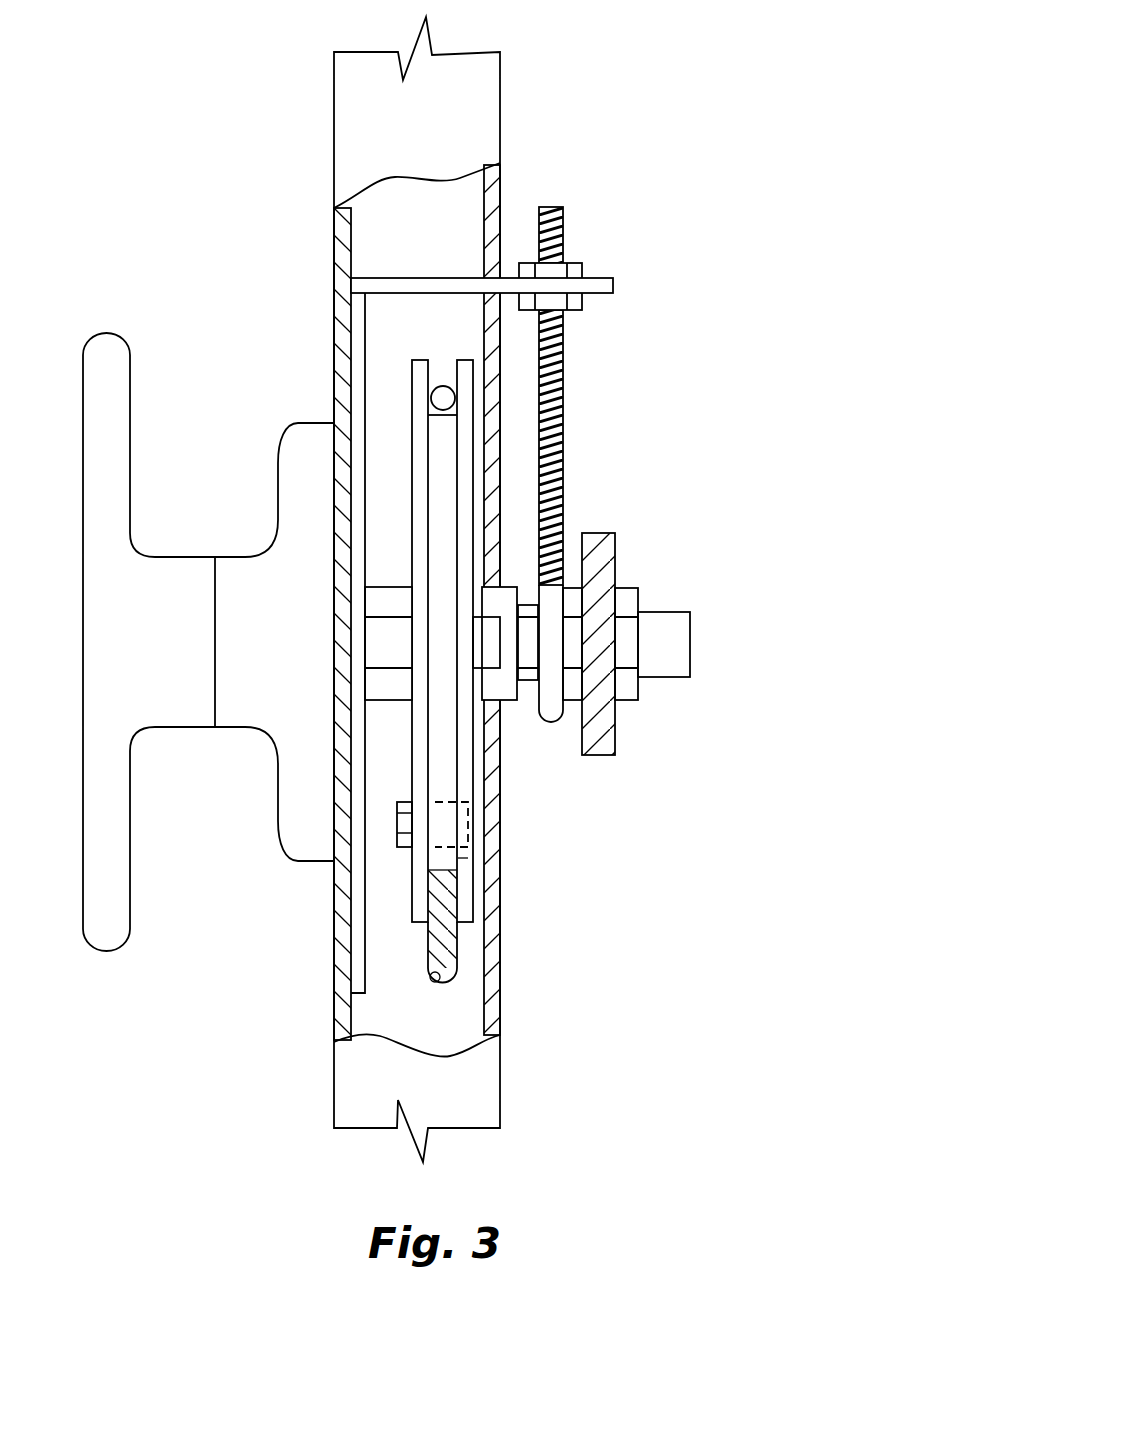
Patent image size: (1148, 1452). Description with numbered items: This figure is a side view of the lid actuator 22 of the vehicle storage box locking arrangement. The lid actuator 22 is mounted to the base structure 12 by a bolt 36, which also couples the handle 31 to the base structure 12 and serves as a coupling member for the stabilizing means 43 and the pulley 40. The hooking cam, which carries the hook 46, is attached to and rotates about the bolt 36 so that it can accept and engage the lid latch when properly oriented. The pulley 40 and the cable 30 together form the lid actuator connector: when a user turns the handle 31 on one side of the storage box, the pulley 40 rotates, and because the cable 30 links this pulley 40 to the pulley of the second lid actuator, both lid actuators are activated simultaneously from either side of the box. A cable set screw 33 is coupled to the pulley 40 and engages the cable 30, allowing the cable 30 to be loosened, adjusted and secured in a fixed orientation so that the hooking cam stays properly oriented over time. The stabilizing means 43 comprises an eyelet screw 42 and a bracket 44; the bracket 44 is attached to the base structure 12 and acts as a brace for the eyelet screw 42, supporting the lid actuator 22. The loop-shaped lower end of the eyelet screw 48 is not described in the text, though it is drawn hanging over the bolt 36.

The base structure 12 is at (480, 90).
The lid actuator 22 is at (598, 574).
The cable 30 is at (440, 383).
The handle 31 is at (100, 937).
The cable set screw 33 is at (438, 823).
The bolt 36 is at (667, 640).
The pulley 40 is at (472, 858).
The eyelet screw 42 is at (548, 212).
The stabilizing means 43 is at (628, 240).
The bracket 44 is at (615, 285).
The hook 46 is at (587, 542).
The hanger loop 48 is at (527, 663).